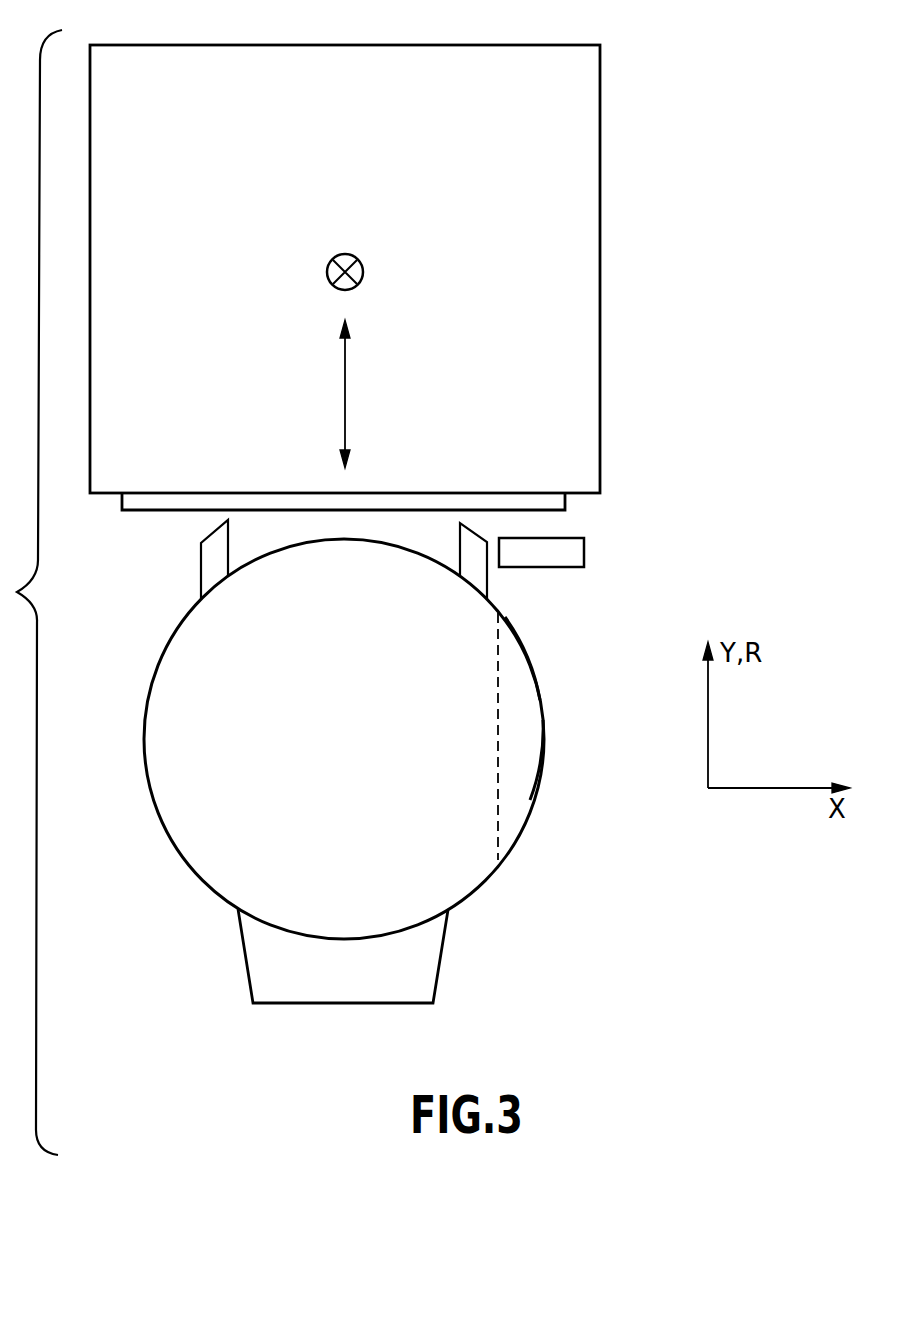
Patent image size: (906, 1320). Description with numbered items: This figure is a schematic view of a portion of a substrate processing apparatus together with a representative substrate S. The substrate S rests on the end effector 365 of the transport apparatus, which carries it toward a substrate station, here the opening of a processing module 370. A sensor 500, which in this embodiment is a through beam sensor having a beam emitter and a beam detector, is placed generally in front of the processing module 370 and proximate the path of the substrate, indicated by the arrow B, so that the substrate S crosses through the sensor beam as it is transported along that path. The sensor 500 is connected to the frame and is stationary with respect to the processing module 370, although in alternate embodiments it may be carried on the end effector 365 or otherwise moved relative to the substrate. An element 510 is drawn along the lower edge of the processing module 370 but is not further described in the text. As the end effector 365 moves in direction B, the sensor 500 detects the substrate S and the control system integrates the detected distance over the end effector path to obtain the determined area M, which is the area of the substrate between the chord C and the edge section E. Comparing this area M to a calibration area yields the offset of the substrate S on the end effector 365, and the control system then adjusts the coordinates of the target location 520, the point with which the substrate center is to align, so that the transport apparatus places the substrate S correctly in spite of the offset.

The processing module 370 is at (601, 100).
The plate 510 is at (567, 503).
The target location 520 is at (363, 280).
The sensor 500 is at (585, 557).
The end effector 365 is at (445, 960).
The substrate S is at (264, 700).
The edge section E is at (525, 658).
The chord C is at (498, 732).
The determined area M is at (528, 750).
The direction of substrate movement B is at (345, 397).